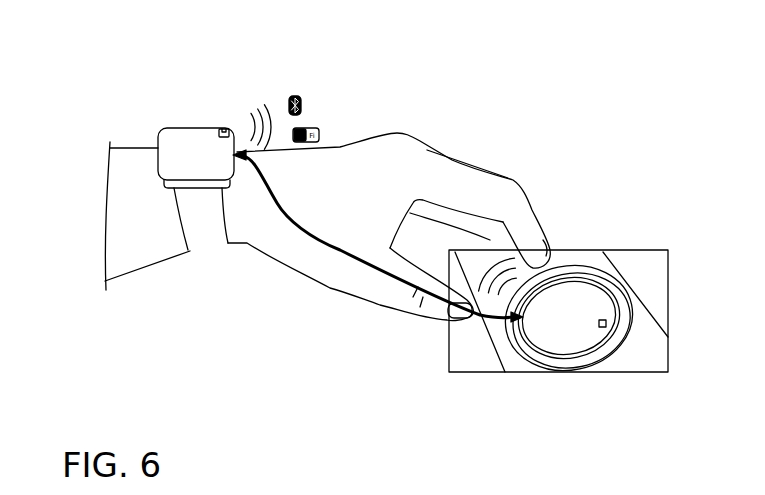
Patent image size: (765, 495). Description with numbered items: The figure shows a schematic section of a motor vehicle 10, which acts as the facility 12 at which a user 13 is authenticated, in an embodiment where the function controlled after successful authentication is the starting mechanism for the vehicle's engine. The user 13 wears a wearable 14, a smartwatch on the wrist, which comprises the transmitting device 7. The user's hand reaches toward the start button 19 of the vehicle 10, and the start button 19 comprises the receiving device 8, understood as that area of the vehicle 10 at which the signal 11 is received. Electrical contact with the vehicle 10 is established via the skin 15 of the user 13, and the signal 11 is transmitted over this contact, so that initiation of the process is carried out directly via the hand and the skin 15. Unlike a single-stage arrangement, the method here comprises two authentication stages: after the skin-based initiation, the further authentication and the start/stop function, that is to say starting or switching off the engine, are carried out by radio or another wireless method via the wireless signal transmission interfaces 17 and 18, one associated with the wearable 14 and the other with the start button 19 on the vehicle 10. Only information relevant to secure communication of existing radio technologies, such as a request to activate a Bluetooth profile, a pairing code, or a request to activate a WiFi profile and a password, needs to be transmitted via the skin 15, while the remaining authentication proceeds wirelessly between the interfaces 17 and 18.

The transmitting device 7 is at (223, 129).
The receiving device 8 is at (603, 327).
The motor vehicle 10 is at (574, 271).
The signal 11 is at (295, 228).
The facility 12 is at (645, 222).
The user 13 is at (132, 160).
The wearable 14 is at (197, 133).
The skin 15 is at (302, 263).
The wireless signal transmission interface 17 is at (243, 106).
The wireless signal transmission interface 18 is at (519, 270).
The start button 19 is at (592, 290).